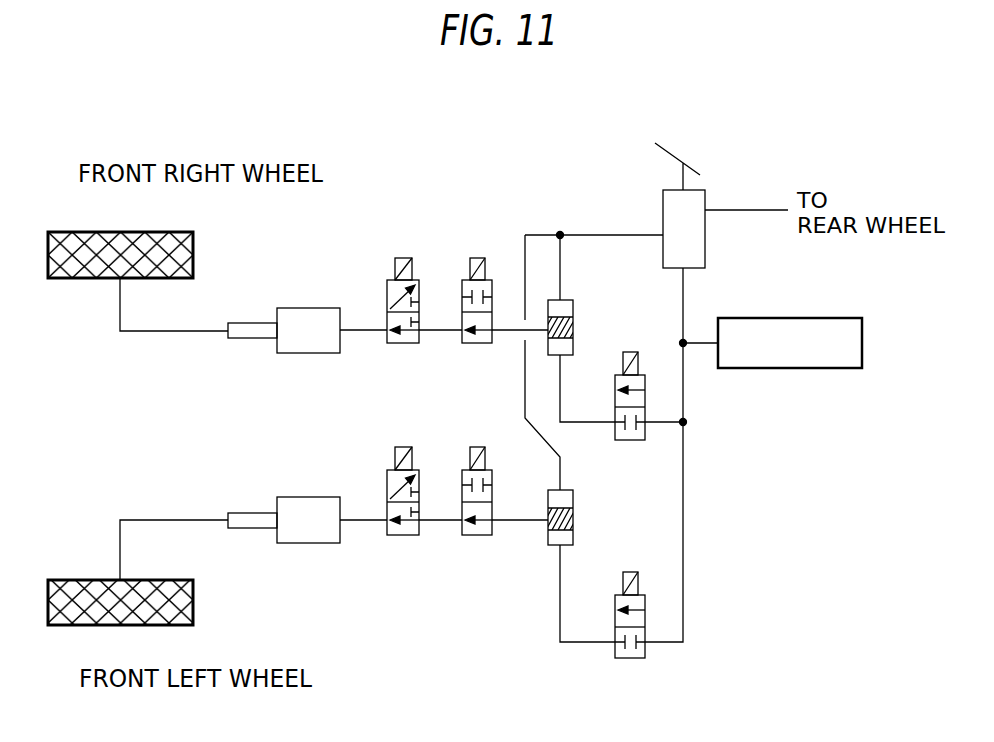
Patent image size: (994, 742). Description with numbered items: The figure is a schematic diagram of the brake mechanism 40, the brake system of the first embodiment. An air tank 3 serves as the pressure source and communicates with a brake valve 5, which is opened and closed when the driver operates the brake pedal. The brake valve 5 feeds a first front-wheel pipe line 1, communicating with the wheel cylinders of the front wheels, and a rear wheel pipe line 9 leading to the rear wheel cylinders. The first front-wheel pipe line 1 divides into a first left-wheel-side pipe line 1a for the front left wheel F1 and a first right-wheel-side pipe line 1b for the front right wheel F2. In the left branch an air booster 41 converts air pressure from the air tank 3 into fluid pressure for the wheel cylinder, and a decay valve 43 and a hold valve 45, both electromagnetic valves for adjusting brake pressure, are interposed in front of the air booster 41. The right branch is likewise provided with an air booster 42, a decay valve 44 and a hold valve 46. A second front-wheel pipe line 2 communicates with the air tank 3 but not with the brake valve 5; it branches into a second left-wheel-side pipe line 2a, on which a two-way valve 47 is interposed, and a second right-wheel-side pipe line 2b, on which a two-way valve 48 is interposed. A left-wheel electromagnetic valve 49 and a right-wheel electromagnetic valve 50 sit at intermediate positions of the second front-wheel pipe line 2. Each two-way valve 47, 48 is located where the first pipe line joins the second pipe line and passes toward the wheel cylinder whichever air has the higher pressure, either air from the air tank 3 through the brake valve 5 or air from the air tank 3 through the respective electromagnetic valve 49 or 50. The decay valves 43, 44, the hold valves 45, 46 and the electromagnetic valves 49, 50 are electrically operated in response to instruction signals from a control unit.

The first front-wheel pipe line 1 is at (600, 235).
The first left-wheel-side pipe line 1a is at (525, 265).
The first right-wheel-side pipe line 1b is at (560, 258).
The second front-wheel pipe line 2 is at (683, 386).
The second left-wheel-side pipe line 2a is at (683, 605).
The second right-wheel-side pipe line 2b is at (598, 425).
The air tank 3 is at (780, 318).
The brake valve 5 is at (705, 245).
The rear wheel pipe line 9 is at (743, 210).
The brake mechanism 40 is at (447, 630).
The air booster 41 is at (308, 543).
The air booster 42 is at (308, 353).
The decay valve 43 is at (403, 535).
The decay valve 44 is at (403, 343).
The hold valve 45 is at (478, 535).
The hold valve 46 is at (478, 343).
The two-way valve 47 is at (573, 530).
The two-way valve 48 is at (573, 305).
The left-wheel electromagnetic valve 49 is at (630, 658).
The right-wheel electromagnetic valve 50 is at (645, 398).
The front left wheel F1 is at (193, 600).
The front right wheel F2 is at (193, 250).